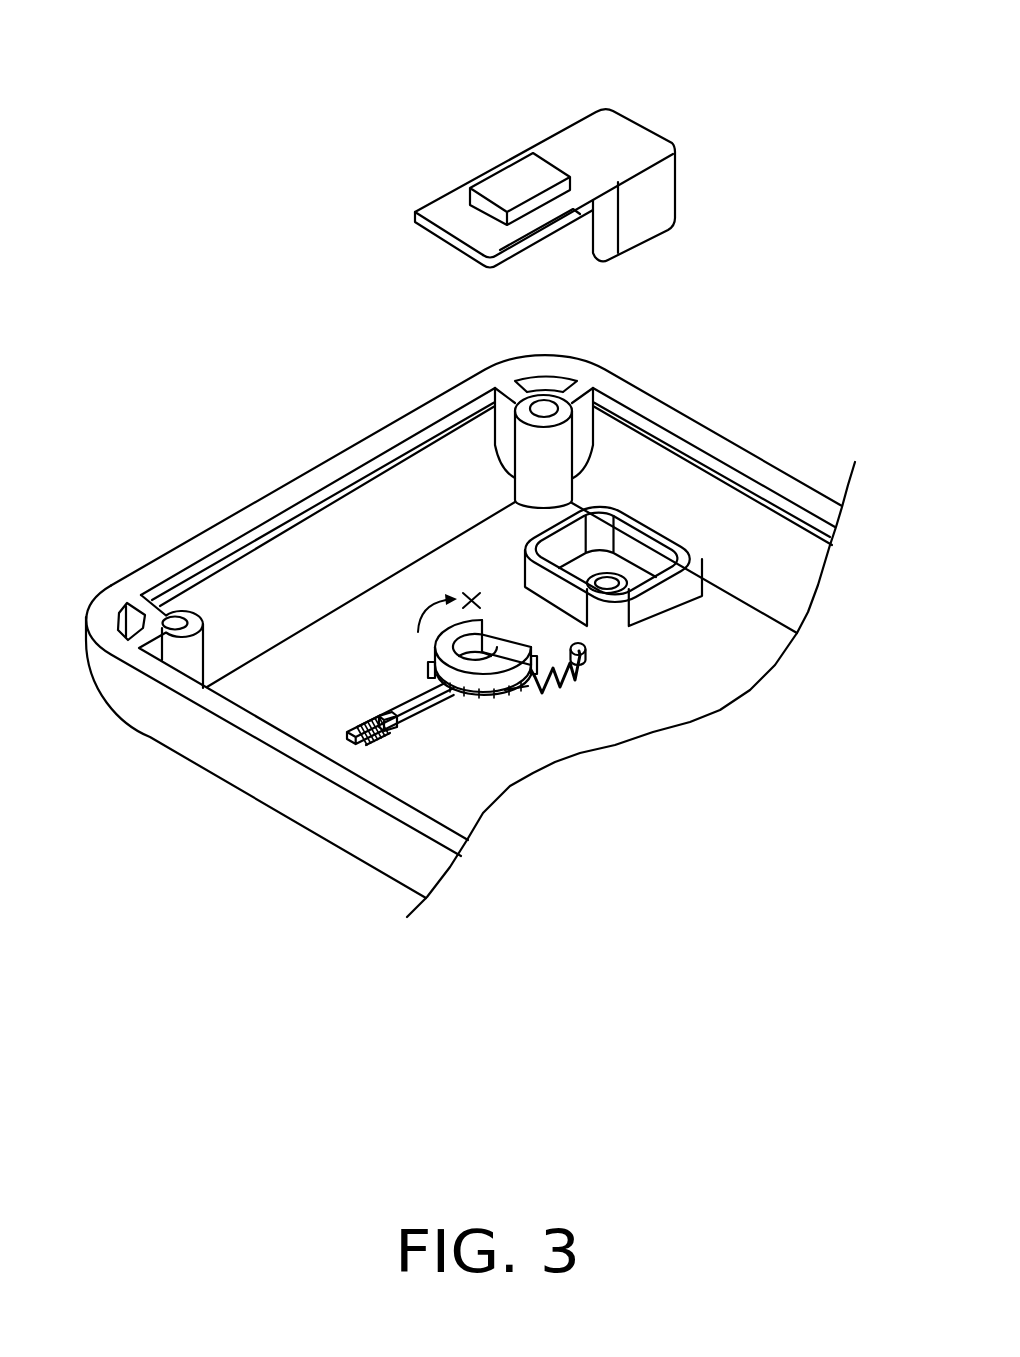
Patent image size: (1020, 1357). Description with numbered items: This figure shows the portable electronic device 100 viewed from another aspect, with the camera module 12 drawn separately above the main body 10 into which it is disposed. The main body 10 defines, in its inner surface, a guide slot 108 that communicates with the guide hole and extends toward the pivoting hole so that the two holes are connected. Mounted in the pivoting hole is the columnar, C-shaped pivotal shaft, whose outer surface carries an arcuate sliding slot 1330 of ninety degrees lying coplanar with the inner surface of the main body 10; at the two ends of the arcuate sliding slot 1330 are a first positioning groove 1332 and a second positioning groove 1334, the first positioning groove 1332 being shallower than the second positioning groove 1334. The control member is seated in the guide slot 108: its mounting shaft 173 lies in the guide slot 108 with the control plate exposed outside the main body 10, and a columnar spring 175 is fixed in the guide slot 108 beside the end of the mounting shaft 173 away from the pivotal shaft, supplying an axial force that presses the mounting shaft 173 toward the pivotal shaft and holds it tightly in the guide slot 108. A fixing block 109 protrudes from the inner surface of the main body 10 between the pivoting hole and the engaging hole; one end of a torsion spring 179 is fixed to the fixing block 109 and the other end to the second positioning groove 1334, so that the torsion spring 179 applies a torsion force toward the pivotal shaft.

The portable electronic device 100 is at (444, 43).
The camera module 12 is at (684, 252).
The main body 10 is at (710, 508).
The guide slot 108 is at (376, 718).
The fixing block 109 is at (593, 652).
The mounting shaft 173 is at (424, 692).
The columnar spring 175 is at (350, 730).
The torsion spring 179 is at (580, 662).
The arcuate sliding slot 1330 is at (493, 688).
The first positioning groove 1332 is at (455, 700).
The second positioning groove 1334 is at (521, 668).